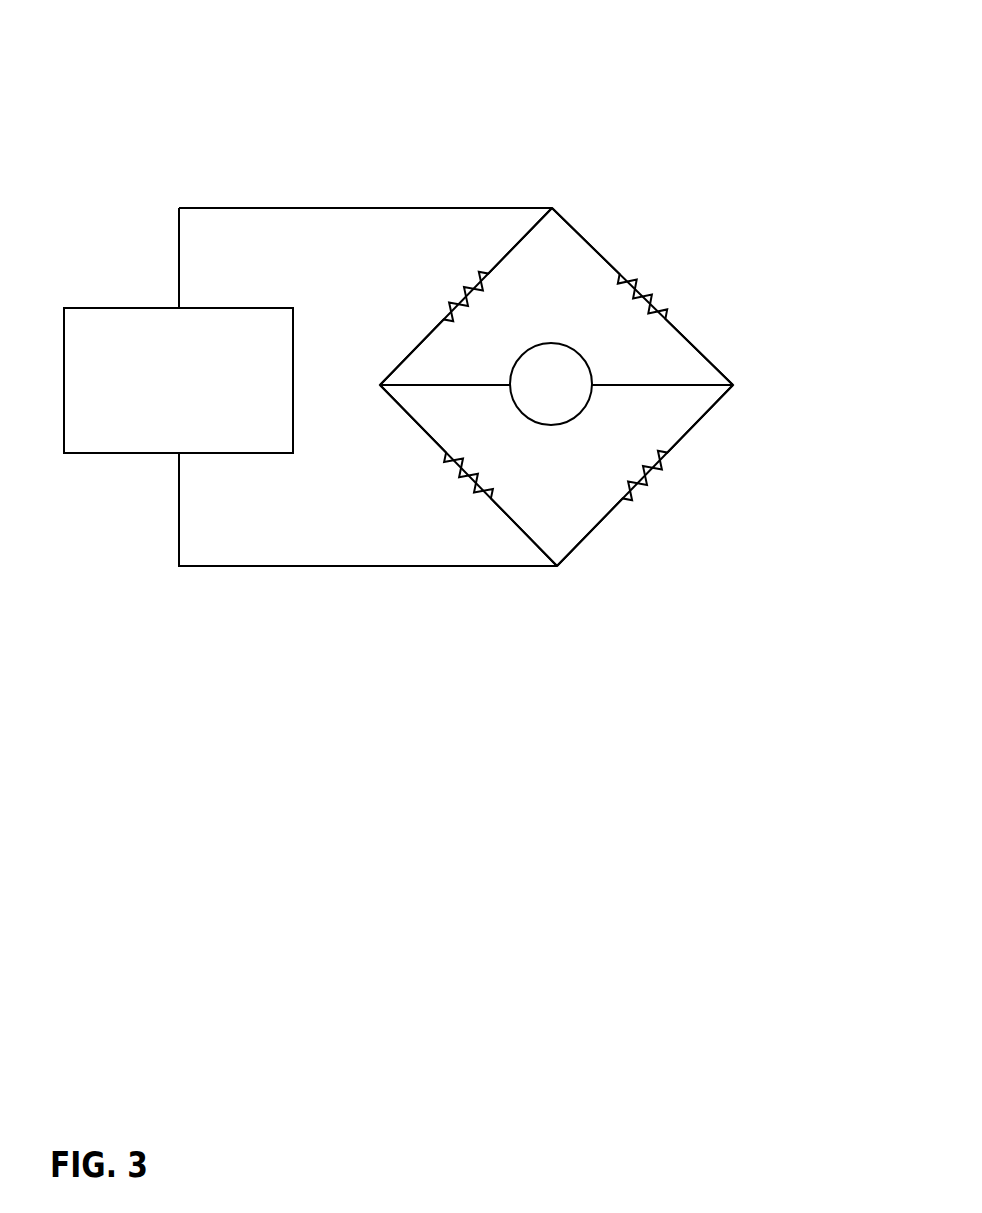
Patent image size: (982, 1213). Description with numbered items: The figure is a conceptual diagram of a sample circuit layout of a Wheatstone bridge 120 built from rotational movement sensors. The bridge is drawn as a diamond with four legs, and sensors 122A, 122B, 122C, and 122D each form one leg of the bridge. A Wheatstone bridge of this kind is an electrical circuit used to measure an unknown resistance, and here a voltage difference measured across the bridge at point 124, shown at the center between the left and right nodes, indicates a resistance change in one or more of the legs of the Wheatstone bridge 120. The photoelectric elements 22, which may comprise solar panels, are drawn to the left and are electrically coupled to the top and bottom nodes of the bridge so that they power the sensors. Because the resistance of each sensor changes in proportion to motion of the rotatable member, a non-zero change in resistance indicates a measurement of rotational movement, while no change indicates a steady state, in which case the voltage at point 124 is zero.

The Wheatstone bridge 120 is at (478, 127).
The photoelectric elements 22 is at (193, 422).
The sensor 122A is at (450, 290).
The sensor 122B is at (660, 290).
The sensor 122C is at (657, 492).
The sensor 122D is at (453, 495).
The point 124 is at (538, 345).